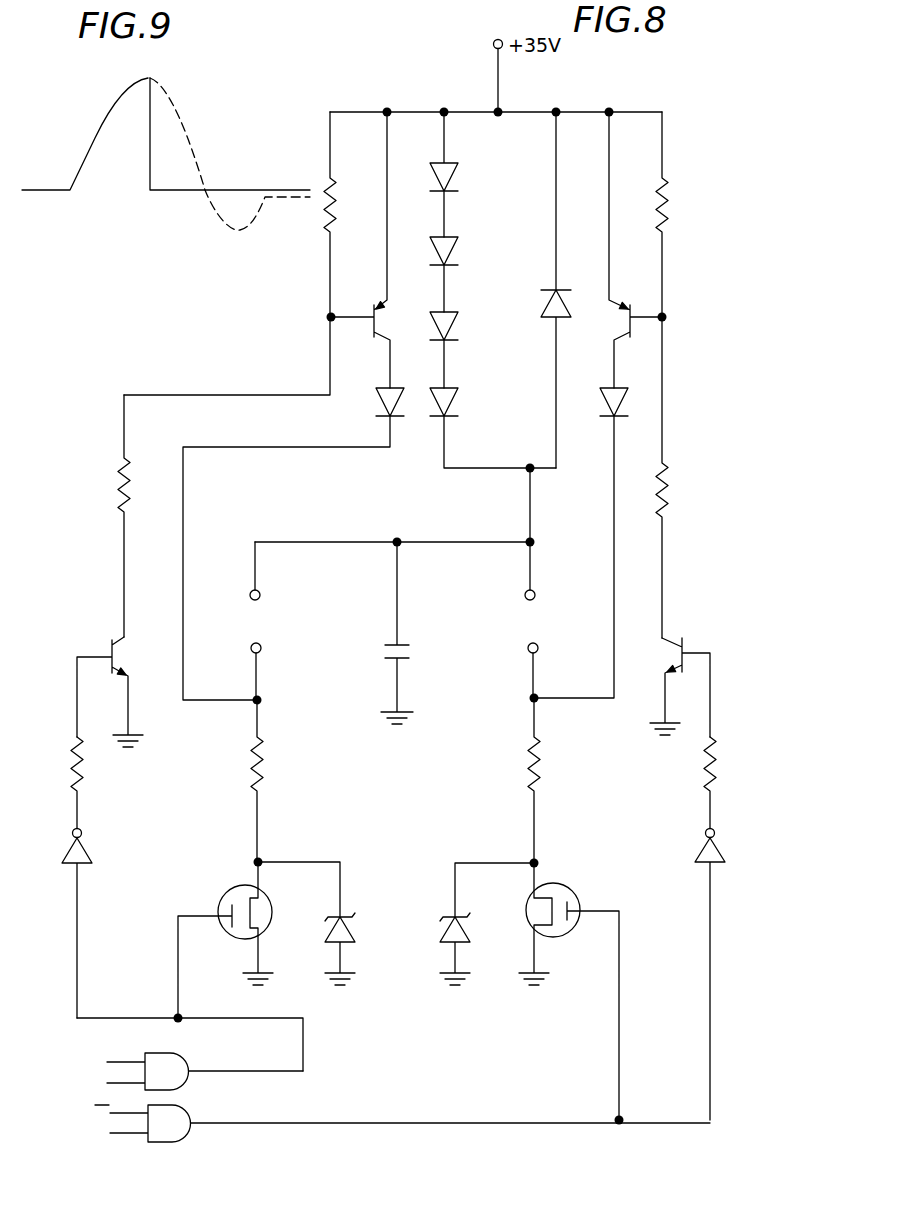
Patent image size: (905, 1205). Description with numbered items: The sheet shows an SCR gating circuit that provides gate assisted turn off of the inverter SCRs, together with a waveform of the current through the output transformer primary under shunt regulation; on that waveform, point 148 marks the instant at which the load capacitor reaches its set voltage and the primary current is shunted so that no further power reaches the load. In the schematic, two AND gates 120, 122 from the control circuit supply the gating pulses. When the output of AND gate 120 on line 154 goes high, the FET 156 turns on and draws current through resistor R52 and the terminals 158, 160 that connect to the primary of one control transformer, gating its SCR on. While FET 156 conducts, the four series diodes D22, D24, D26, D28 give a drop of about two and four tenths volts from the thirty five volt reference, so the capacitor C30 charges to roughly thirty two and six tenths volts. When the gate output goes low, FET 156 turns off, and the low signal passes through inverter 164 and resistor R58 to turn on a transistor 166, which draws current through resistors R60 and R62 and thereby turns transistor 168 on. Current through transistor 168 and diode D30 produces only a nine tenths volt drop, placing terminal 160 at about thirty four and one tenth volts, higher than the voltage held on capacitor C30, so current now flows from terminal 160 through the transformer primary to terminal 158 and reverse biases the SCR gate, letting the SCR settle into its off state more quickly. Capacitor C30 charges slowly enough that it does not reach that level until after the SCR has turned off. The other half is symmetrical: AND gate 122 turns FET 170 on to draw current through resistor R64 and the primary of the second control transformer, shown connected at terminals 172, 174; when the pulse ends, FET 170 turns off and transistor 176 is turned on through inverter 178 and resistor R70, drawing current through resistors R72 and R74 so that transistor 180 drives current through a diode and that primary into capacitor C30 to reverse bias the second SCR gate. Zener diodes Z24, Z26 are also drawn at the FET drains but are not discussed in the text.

In FIG. 9, the point 148 is at (152, 78).
In FIG. 8, the transistor 168 is at (372, 305).
In FIG. 8, the transistor 180 is at (632, 308).
In FIG. 8, the transistor 176 is at (679, 640).
In FIG. 8, the transistor 166 is at (113, 640).
In FIG. 8, the terminal 158 is at (260, 591).
In FIG. 8, the terminal 172 is at (526, 591).
In FIG. 8, the terminal 160 is at (261, 651).
In FIG. 8, the terminal 174 is at (528, 652).
In FIG. 8, the inverter 164 is at (85, 847).
In FIG. 8, the inverter 178 is at (699, 843).
In FIG. 8, the FET 156 is at (236, 884).
In FIG. 8, the FET 170 is at (565, 885).
In FIG. 8, the line 154 is at (127, 1016).
In FIG. 8, the AND gate 120 is at (190, 1060).
In FIG. 8, the AND gate 122 is at (193, 1120).
In FIG. 8, the resistor R60 is at (252, 253).
In FIG. 8, the resistor R74 is at (682, 214).
In FIG. 8, the resistor R72 is at (685, 477).
In FIG. 8, the resistor R70 is at (729, 782).
In FIG. 8, the resistor R62 is at (105, 516).
In FIG. 8, the resistor R58 is at (56, 782).
In FIG. 8, the resistor R52 is at (278, 781).
In FIG. 8, the resistor R64 is at (556, 780).
In FIG. 8, the diode D22 is at (467, 174).
In FIG. 8, the diode D24 is at (467, 274).
In FIG. 8, the diode D26 is at (468, 350).
In FIG. 8, the diode D28 is at (493, 428).
In FIG. 8, the diode D30 is at (293, 532).
In FIG. 8, the capacitor C30 is at (417, 633).
In FIG. 8, the zener diode Z24 is at (326, 923).
In FIG. 8, the zener diode Z26 is at (487, 924).